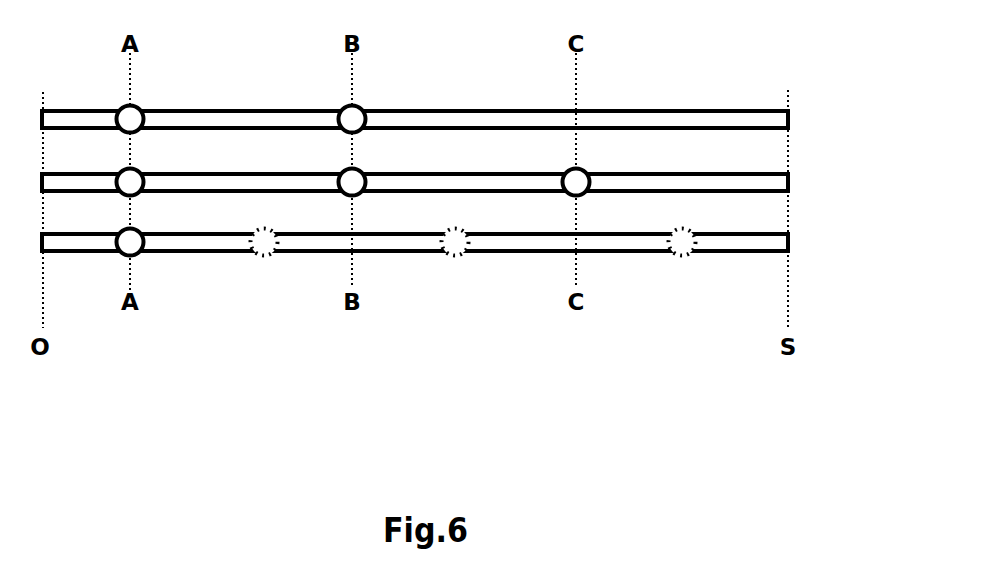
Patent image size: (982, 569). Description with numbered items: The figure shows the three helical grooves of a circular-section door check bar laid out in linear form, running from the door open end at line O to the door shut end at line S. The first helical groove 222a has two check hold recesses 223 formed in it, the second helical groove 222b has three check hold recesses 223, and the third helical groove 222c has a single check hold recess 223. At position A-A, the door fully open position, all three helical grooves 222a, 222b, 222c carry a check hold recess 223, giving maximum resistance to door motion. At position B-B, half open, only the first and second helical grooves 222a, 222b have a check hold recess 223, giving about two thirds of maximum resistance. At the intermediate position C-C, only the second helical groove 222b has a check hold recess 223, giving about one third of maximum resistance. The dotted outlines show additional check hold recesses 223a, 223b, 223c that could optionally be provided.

The first helical groove 222a is at (789, 117).
The second helical groove 222b is at (789, 179).
The third helical groove 222c is at (789, 242).
The check hold recess 223 is at (353, 195).
The additional check hold recess 223a is at (265, 258).
The additional check hold recess 223b is at (458, 258).
The additional check hold recess 223c is at (680, 258).